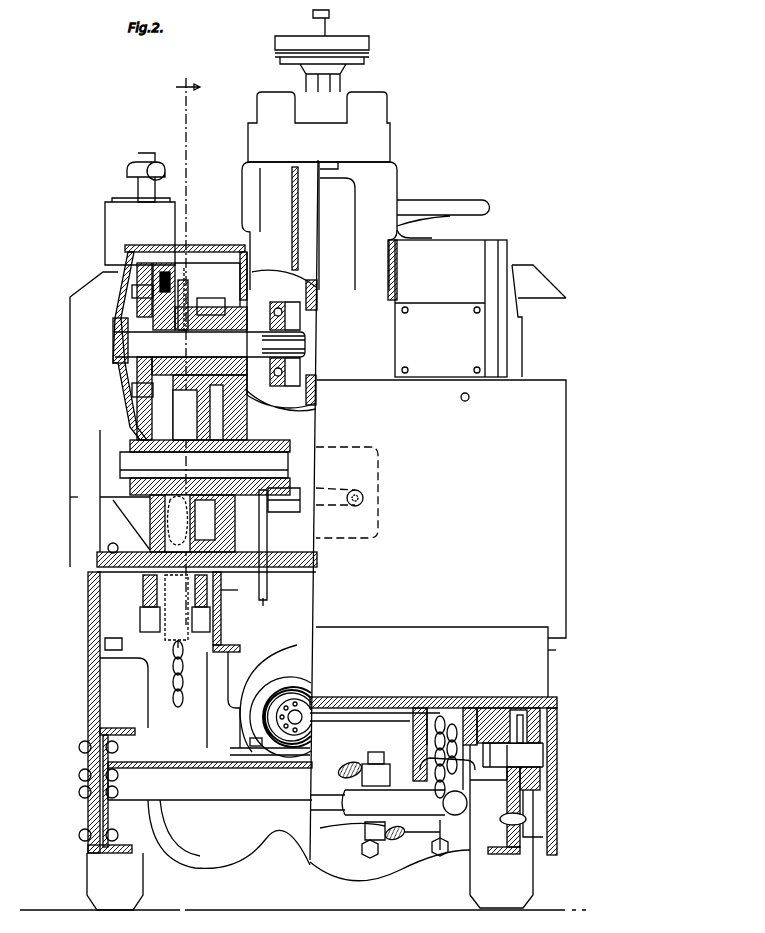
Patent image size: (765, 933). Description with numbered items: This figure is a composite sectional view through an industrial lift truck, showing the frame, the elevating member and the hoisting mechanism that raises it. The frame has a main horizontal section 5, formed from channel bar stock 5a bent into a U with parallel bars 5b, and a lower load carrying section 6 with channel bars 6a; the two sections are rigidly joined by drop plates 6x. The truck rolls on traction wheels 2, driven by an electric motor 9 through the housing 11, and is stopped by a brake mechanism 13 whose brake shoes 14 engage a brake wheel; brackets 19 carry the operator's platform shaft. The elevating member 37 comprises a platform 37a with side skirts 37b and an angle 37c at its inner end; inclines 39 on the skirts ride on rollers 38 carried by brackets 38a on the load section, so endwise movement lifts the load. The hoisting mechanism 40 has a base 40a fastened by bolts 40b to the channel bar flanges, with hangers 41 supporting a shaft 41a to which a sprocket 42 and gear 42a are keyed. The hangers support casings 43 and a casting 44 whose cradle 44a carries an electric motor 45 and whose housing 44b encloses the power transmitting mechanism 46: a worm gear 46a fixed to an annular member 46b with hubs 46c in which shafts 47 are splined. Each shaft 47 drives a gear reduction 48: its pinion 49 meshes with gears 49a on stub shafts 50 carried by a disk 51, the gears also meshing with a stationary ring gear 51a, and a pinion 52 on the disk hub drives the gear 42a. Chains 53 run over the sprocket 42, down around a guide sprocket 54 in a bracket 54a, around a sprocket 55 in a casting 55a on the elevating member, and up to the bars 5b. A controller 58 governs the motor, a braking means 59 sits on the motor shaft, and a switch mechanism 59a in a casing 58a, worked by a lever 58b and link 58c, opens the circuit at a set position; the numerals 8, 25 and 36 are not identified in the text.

The traction wheels 2 is at (115, 906).
The main horizontal section 5 is at (178, 404).
The channel bar stock 5a is at (90, 575).
The parallel bars 5b is at (220, 605).
The load carrying section 6 is at (122, 812).
The channel bars 6a is at (115, 860).
The drop plates 6x is at (78, 790).
The housing 8 is at (70, 493).
The electric motor 9 is at (290, 655).
The housing 11 is at (240, 836).
The brake mechanism 13 is at (280, 680).
The brake shoes 14 is at (262, 700).
The brackets 19 is at (438, 510).
The handle 25 is at (465, 200).
The link rod 36 is at (420, 845).
The elevating member 37 is at (557, 755).
The platform 37a is at (540, 697).
The skirts 37b is at (545, 790).
The angle 37c is at (548, 652).
The rollers 38 is at (545, 722).
The brackets 38a is at (500, 812).
The inclines 39 is at (540, 812).
The hoisting mechanism 40 is at (130, 510).
The base 40a is at (270, 595).
The bolts 40b is at (88, 600).
The hangers 41 is at (267, 540).
The shafts 41a is at (120, 462).
The sprocket 42 is at (130, 490).
The gear 42a is at (239, 581).
The casings 43 is at (470, 240).
The casting 44 is at (357, 178).
The cradle 44a is at (410, 175).
The housing 44b is at (272, 402).
The electric motor 45 is at (390, 140).
The power transmitting mechanism 46 is at (305, 343).
The worm gear 46a is at (316, 385).
The annular member 46b is at (285, 365).
The hubs 46c is at (290, 277).
The shafts 47 is at (192, 296).
The gear reduction 48 is at (113, 372).
The pinion 49 is at (113, 350).
The gears 49a is at (114, 312).
The stub shafts 50 is at (178, 272).
The disk 51 is at (120, 408).
The ring gear 51a is at (140, 255).
The pinion 52 is at (218, 298).
The chains 53 is at (148, 690).
The guide sprocket 54 is at (205, 688).
The bracket 54a is at (108, 545).
The sprocket 55 is at (472, 790).
The casting 55a is at (413, 730).
The controller 58 is at (162, 200).
The casing 58a is at (345, 447).
The lever 58b is at (363, 492).
The link 58c is at (258, 625).
The braking means 59 is at (368, 48).
The switch mechanism 59a is at (286, 500).